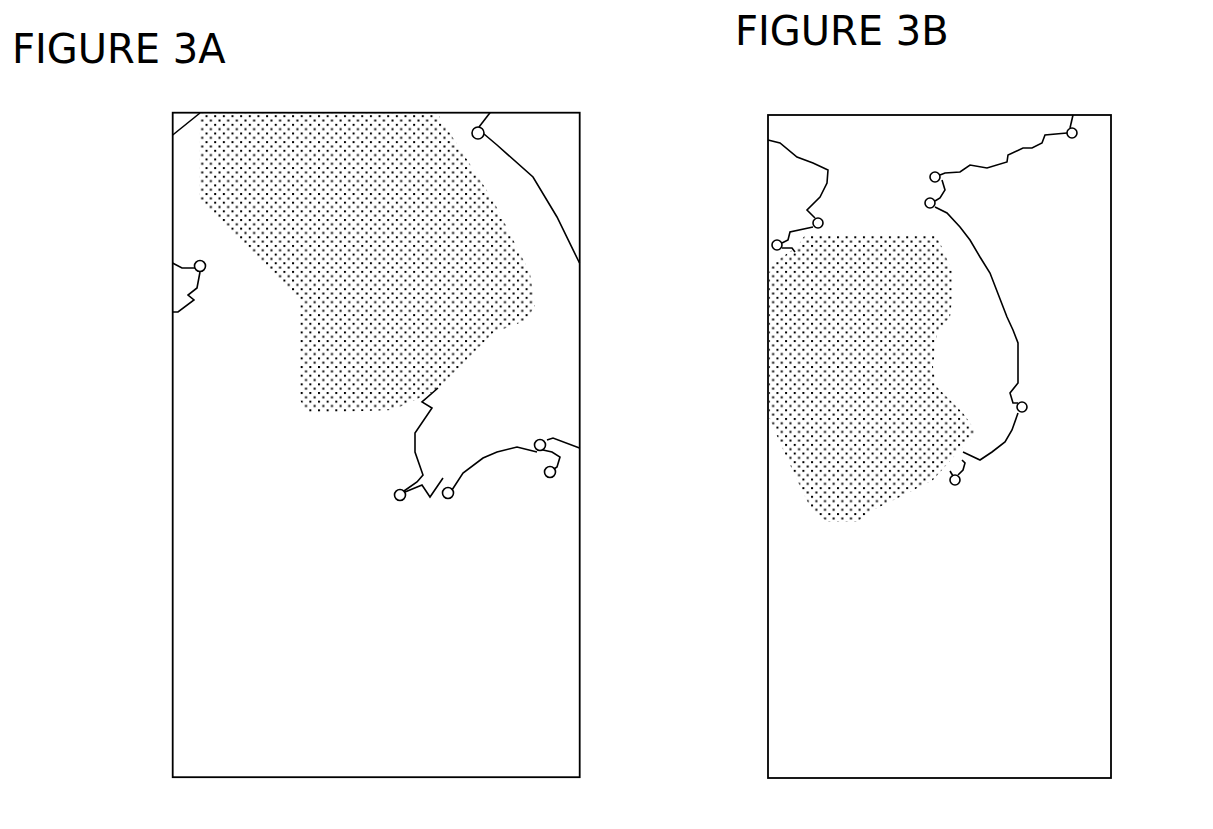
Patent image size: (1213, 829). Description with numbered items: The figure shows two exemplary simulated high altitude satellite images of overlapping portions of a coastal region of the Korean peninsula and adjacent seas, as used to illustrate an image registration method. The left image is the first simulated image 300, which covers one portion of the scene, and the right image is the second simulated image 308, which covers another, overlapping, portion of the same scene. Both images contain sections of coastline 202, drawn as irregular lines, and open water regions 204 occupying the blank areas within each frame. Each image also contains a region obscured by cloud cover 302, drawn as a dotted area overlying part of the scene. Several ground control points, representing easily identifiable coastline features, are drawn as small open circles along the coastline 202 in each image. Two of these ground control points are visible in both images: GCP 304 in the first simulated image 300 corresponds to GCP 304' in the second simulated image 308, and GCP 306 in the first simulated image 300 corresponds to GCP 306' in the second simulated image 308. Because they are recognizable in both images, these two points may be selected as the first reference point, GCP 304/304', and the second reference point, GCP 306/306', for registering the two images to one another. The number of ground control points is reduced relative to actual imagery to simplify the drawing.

In FIG. 3A, the first simulated image 300 is at (414, 84).
In FIG. 3B, the second simulated image 308 is at (962, 79).
In FIG. 3A, the coastline 202 is at (415, 448).
In FIG. 3B, the coastline 202 is at (990, 272).
In FIG. 3A, the open water 204 is at (272, 641).
In FIG. 3B, the open water 204 is at (887, 673).
In FIG. 3A, the cloud cover 302 is at (462, 288).
In FIG. 3B, the cloud cover 302 is at (798, 357).
In FIG. 3A, the GCP 304 is at (558, 106).
In FIG. 3B, the GCP 304' is at (1056, 168).
In FIG. 3A, the GCP 306 is at (544, 483).
In FIG. 3B, the GCP 306' is at (979, 373).